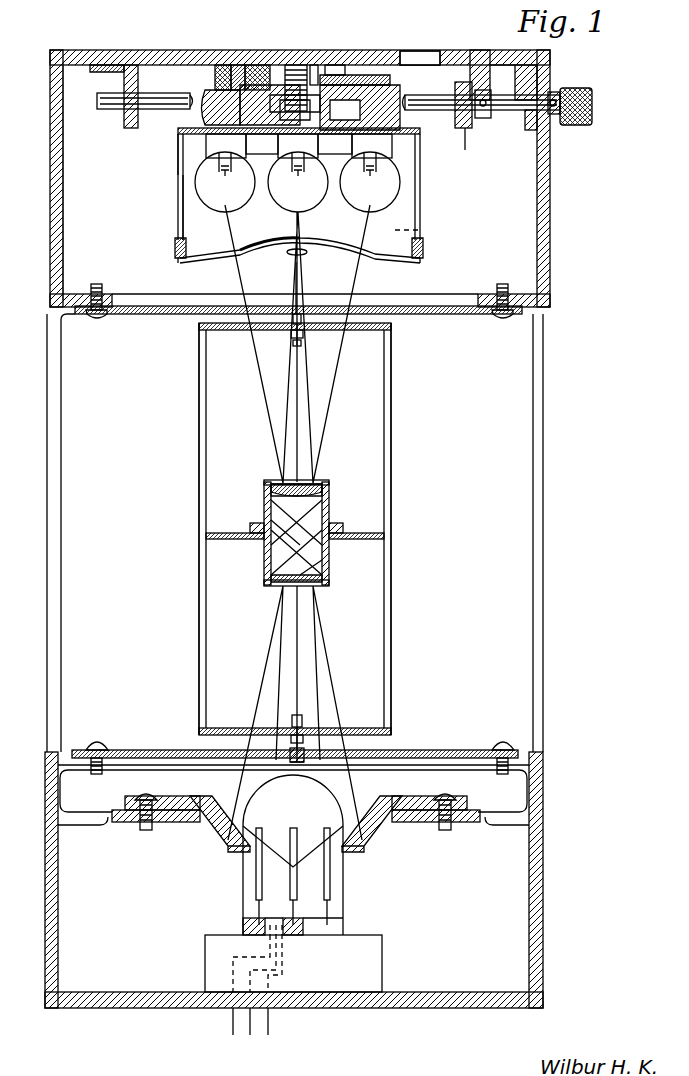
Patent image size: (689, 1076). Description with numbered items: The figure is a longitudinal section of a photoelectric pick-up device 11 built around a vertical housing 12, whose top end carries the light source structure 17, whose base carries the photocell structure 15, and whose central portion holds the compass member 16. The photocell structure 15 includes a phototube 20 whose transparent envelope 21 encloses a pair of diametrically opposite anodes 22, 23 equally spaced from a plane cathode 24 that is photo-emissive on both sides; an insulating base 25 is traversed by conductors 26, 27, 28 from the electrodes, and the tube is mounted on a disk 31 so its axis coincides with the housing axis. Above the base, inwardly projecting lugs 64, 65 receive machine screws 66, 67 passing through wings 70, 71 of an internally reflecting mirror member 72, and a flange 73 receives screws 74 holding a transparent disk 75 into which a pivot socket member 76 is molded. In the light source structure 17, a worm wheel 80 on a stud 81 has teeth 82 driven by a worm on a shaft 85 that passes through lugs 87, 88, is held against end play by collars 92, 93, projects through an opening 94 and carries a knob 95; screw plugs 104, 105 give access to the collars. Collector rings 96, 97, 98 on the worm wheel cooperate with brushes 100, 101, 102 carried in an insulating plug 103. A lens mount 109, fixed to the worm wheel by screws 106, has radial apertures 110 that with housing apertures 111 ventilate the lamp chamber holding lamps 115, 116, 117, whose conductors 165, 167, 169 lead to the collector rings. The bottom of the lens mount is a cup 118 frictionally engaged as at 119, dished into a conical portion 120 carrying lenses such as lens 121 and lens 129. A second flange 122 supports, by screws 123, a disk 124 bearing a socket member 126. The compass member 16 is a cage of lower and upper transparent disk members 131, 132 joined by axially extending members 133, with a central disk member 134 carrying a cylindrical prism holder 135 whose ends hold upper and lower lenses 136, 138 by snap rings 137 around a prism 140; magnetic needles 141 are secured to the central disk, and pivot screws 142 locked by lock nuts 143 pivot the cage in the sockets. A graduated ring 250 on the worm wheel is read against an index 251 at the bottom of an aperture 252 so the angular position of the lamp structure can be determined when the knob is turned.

The photoelectric pick-up device 11 is at (40, 384).
The housing 12 is at (552, 208).
The photocell structure 15 is at (301, 925).
The compass member 16 is at (402, 444).
The light source structure 17 is at (431, 201).
The phototube 20 is at (293, 855).
The transparent envelope 21 is at (243, 873).
The anode 22 is at (256, 892).
The anode 23 is at (330, 868).
The cathode 24 is at (297, 840).
The insulating base 25 is at (310, 932).
The conductor 26 is at (262, 925).
The conductor 27 is at (300, 930).
The conductor 28 is at (310, 925).
The disk 31 is at (382, 960).
The lug 64 is at (110, 822).
The lug 65 is at (485, 822).
The machine screw 66 is at (146, 830).
The machine screw 67 is at (445, 830).
The wing 70 is at (182, 812).
The wing 71 is at (412, 812).
The mirror member 72 is at (222, 855).
The flange 73 is at (90, 770).
The machine screw 74 is at (97, 738).
The disk 75 is at (418, 752).
The pivot socket member 76 is at (305, 762).
The worm wheel 80 is at (368, 100).
The stud 81 is at (320, 62).
The teeth 82 is at (385, 126).
The shaft 85 is at (530, 130).
The lug 87 is at (126, 128).
The lug 88 is at (466, 150).
The collar 92 is at (112, 93).
The collar 93 is at (483, 120).
The opening 94 is at (550, 120).
The knob 95 is at (580, 88).
The collector ring 96 is at (226, 90).
The collector ring 97 is at (268, 62).
The collector ring 98 is at (300, 62).
The brush 100 is at (222, 62).
The brush 101 is at (238, 62).
The brush 102 is at (255, 62).
The insulating plug 103 is at (205, 58).
The screw plug 104 is at (100, 50).
The screw plug 105 is at (480, 58).
The screw 106 is at (415, 150).
The lens mount 109 is at (178, 203).
The radial aperture 110 is at (178, 153).
The aperture 111 is at (420, 58).
The lamp 115 is at (212, 204).
The lamp 116 is at (276, 204).
The lamp 117 is at (344, 204).
The cup 118 is at (424, 248).
The frictional engagement 119 is at (176, 246).
The conical portion 120 is at (330, 258).
The lens 121 is at (250, 260).
The flange 122 is at (95, 284).
The machine screw 123 is at (97, 322).
The disk 124 is at (163, 316).
The socket member 126 is at (325, 302).
The lens 129 is at (305, 250).
The lower disk member 131 is at (220, 728).
The upper disk member 132 is at (392, 338).
The axially extending member 133 is at (198, 646).
The central disk member 134 is at (350, 540).
The prism holder 135 is at (264, 556).
The upper lens 136 is at (312, 484).
The snap ring 137 is at (266, 480).
The lower lens 138 is at (276, 586).
The prism 140 is at (325, 490).
The magnetic needle 141 is at (252, 523).
The pivot screw 142 is at (290, 340).
The lock nut 143 is at (303, 330).
The conductor 165 is at (265, 146).
The conductor 167 is at (337, 146).
The conductor 169 is at (392, 86).
The graduated ring 250 is at (316, 108).
The index 251 is at (338, 64).
The aperture 252 is at (345, 75).